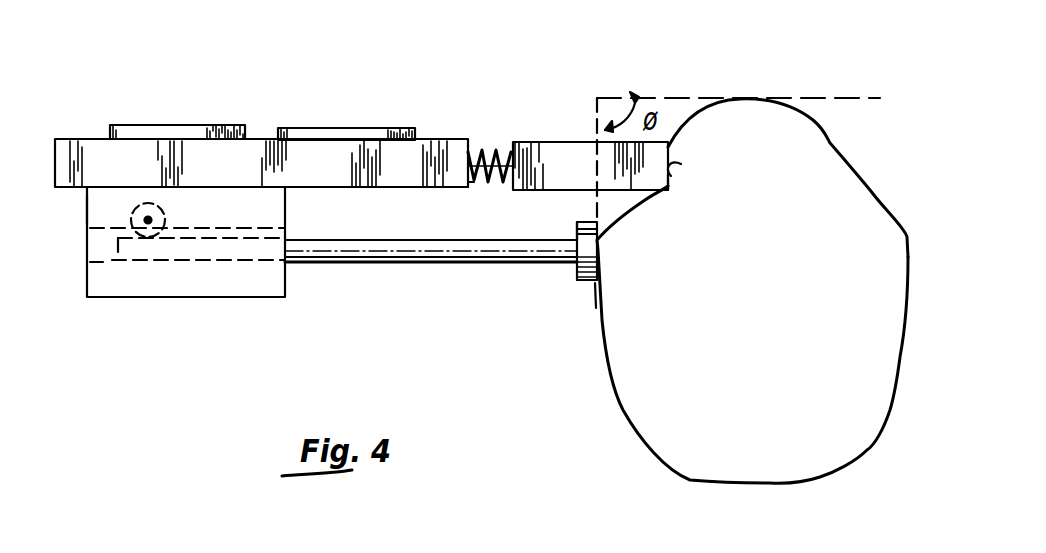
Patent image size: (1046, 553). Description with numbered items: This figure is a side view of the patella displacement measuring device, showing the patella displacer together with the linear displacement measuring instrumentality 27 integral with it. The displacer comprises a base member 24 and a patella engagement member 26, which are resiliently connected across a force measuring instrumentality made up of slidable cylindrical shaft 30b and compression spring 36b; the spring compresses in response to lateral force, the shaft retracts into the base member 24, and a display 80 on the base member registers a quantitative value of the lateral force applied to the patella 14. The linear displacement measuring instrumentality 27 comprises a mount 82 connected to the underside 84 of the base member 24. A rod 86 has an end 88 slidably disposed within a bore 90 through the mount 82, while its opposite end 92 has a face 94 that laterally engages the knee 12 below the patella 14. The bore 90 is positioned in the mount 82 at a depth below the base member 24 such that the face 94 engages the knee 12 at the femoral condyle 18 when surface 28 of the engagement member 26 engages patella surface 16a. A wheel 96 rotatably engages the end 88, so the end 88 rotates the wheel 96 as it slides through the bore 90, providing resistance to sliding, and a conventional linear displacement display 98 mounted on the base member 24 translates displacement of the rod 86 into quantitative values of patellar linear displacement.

The knee 12 is at (687, 283).
The patella 14 is at (743, 130).
The patella surface 16a is at (672, 163).
The femoral condyle 18 is at (577, 278).
The base member 24 is at (261, 138).
The patella engagement member 26 is at (569, 145).
The linear displacement measuring instrumentality 27 is at (90, 207).
The surface 28 is at (668, 182).
The slidable cylindrical shaft 30b is at (498, 150).
The compression spring 36b is at (490, 183).
The display 80 is at (366, 127).
The mount 82 is at (207, 300).
The underside 84 is at (330, 189).
The rod 86 is at (375, 263).
The end 88 is at (135, 248).
The bore 90 is at (103, 250).
The opposite end 92 is at (577, 235).
The face 94 is at (598, 225).
The wheel 96 is at (143, 208).
The linear displacement display 98 is at (146, 124).